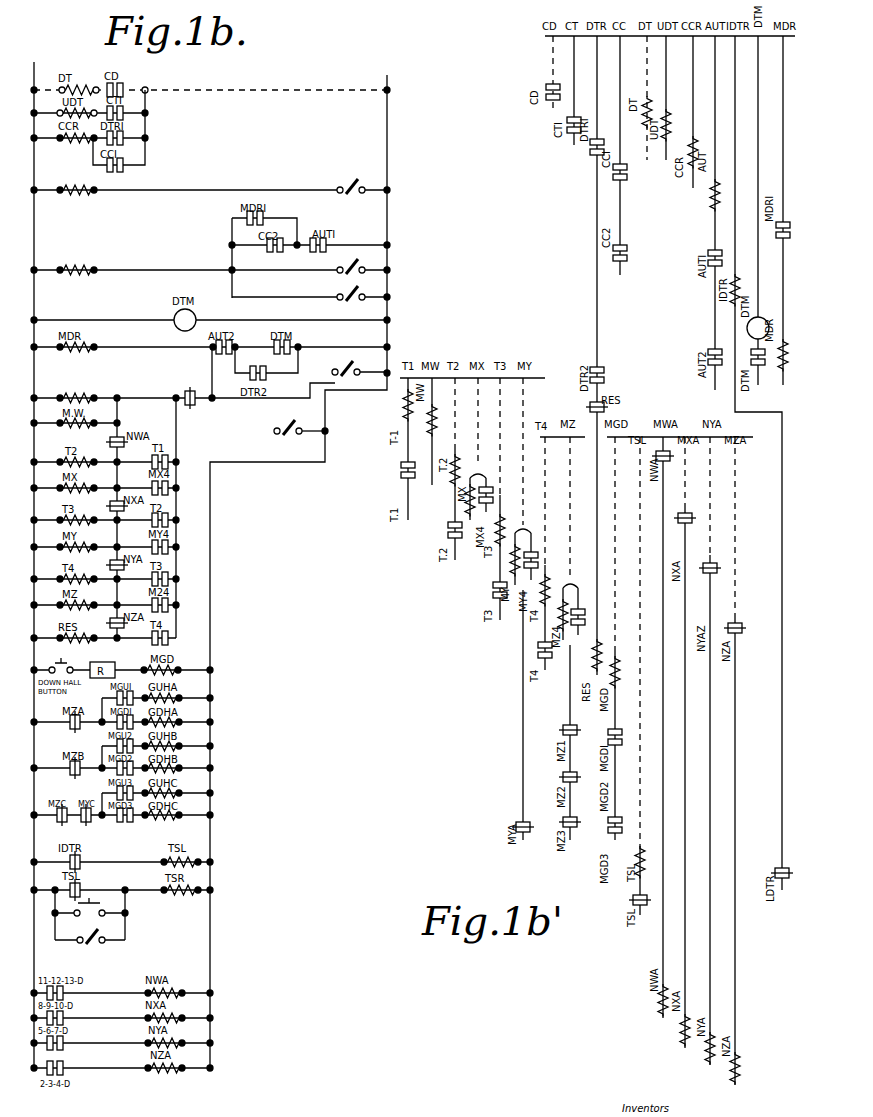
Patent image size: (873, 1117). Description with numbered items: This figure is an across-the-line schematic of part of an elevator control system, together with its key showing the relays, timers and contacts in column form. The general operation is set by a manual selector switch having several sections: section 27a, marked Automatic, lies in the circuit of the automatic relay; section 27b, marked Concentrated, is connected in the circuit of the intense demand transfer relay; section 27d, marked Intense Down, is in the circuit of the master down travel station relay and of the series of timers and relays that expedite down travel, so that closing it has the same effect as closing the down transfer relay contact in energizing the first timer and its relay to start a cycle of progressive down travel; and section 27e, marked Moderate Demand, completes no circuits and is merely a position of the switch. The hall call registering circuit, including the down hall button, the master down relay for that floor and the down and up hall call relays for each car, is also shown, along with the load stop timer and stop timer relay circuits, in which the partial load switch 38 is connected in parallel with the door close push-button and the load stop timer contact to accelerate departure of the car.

The selector switch section "Automatic" 27a is at (350, 186).
The selector switch section "Concentrated" 27b is at (358, 262).
The selector switch section "Intense Down" 27d is at (349, 358).
The selector switch section "Moderate Demand" 27e is at (274, 433).
The partial load switch 38 is at (83, 924).